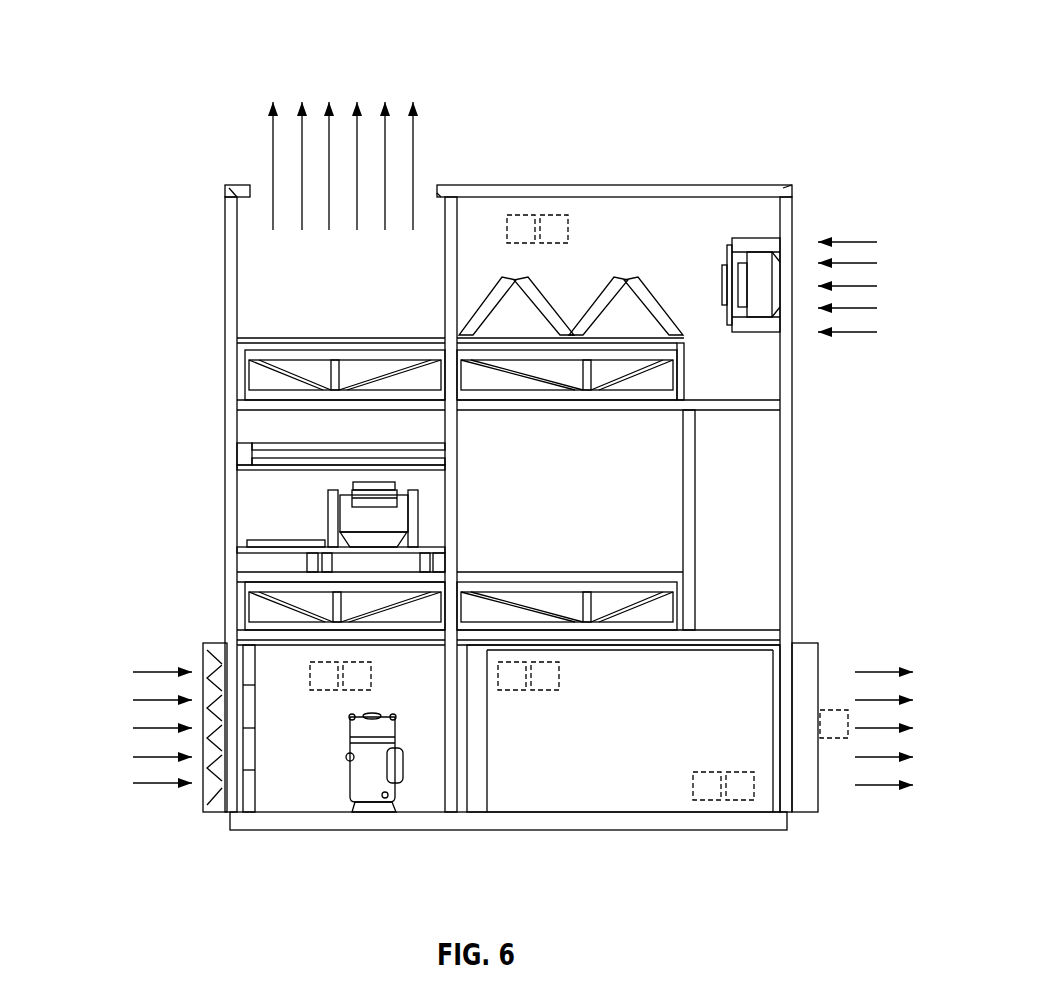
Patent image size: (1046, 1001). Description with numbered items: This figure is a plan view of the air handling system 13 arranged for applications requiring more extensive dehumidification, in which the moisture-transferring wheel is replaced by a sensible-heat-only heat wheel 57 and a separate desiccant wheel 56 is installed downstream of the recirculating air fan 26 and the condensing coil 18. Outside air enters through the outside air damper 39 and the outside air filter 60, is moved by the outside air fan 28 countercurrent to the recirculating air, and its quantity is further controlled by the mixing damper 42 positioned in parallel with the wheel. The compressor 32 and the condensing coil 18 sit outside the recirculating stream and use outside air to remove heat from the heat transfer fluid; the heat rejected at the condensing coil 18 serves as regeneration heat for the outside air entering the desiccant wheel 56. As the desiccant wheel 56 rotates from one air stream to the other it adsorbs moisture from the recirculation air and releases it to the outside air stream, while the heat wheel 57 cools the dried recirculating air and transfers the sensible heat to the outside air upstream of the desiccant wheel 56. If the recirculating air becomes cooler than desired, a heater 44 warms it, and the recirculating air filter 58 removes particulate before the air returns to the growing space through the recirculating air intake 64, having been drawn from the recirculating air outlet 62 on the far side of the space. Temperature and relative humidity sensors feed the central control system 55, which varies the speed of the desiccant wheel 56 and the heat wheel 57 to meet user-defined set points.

The air handling system 13 is at (630, 52).
The condensing coil 18 is at (240, 450).
The recirculating air fan 26 is at (775, 240).
The outside air fan 28 is at (330, 520).
The compressor 32 is at (350, 787).
The outside air damper 39 is at (203, 650).
The mixing damper 42 is at (247, 542).
The heater 44 is at (818, 792).
The central control system 55 is at (760, 508).
The desiccant wheel 56 is at (680, 367).
The heat wheel 57 is at (670, 608).
The recirculating air filter 58 is at (668, 317).
The outside air filter 60 is at (263, 728).
The recirculating air outlet 62 is at (900, 643).
The recirculating air intake 64 is at (887, 277).